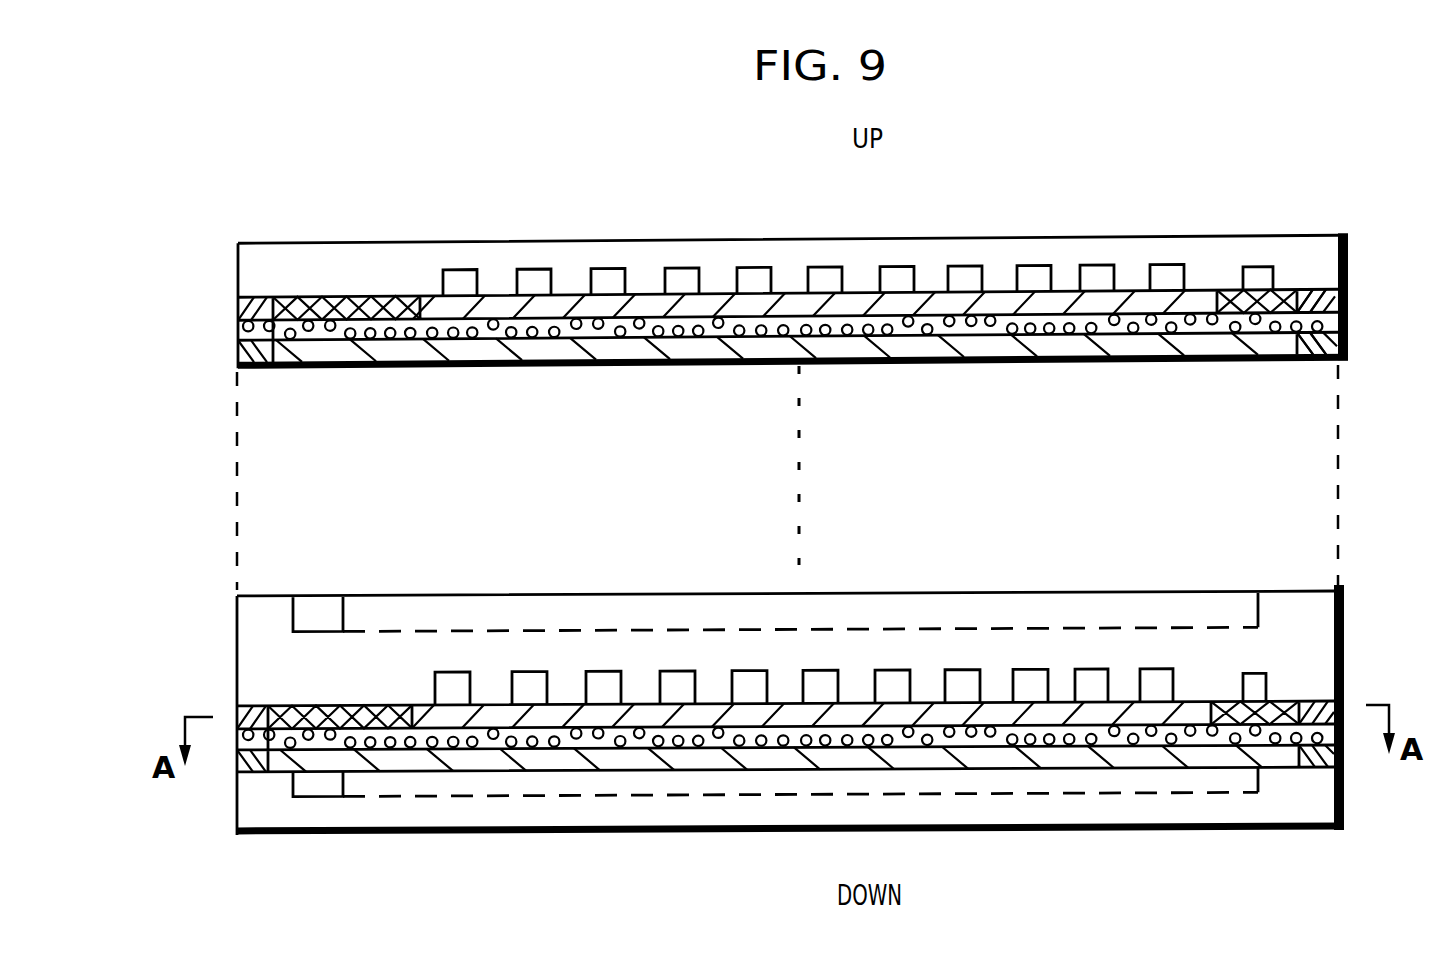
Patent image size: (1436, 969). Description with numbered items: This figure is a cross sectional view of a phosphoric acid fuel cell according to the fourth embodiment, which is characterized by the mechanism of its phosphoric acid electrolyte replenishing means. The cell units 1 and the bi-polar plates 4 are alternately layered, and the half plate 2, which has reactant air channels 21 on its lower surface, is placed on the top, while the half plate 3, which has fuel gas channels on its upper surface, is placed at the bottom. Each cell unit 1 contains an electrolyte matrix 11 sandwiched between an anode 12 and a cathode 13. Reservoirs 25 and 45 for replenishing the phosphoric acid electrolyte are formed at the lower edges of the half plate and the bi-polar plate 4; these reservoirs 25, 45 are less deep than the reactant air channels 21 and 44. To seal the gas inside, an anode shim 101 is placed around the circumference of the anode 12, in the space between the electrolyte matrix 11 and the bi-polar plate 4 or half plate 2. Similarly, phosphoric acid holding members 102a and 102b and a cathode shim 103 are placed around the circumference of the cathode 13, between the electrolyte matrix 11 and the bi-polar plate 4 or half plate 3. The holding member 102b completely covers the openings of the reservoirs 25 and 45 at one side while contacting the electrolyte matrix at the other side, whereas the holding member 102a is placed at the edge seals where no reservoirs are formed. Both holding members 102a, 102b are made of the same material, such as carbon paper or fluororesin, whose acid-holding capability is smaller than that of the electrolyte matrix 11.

The cell unit 1 is at (725, 330).
The half plate 2 is at (1327, 263).
The half plate 3 is at (1310, 790).
The bi-polar plate 4 is at (253, 642).
The electrolyte matrix 11 is at (240, 326).
The anode 12 is at (307, 353).
The cathode 13 is at (433, 303).
The reactant air channel 21 is at (758, 275).
The reservoir 25 is at (1252, 275).
The reactant air channel 44 is at (893, 685).
The reservoir 45 is at (1255, 690).
The anode shim 101 is at (1345, 345).
The phosphoric acid holding member 102a is at (367, 340).
The phosphoric acid holding member 102b is at (1287, 293).
The cathode shim 103 is at (1345, 302).